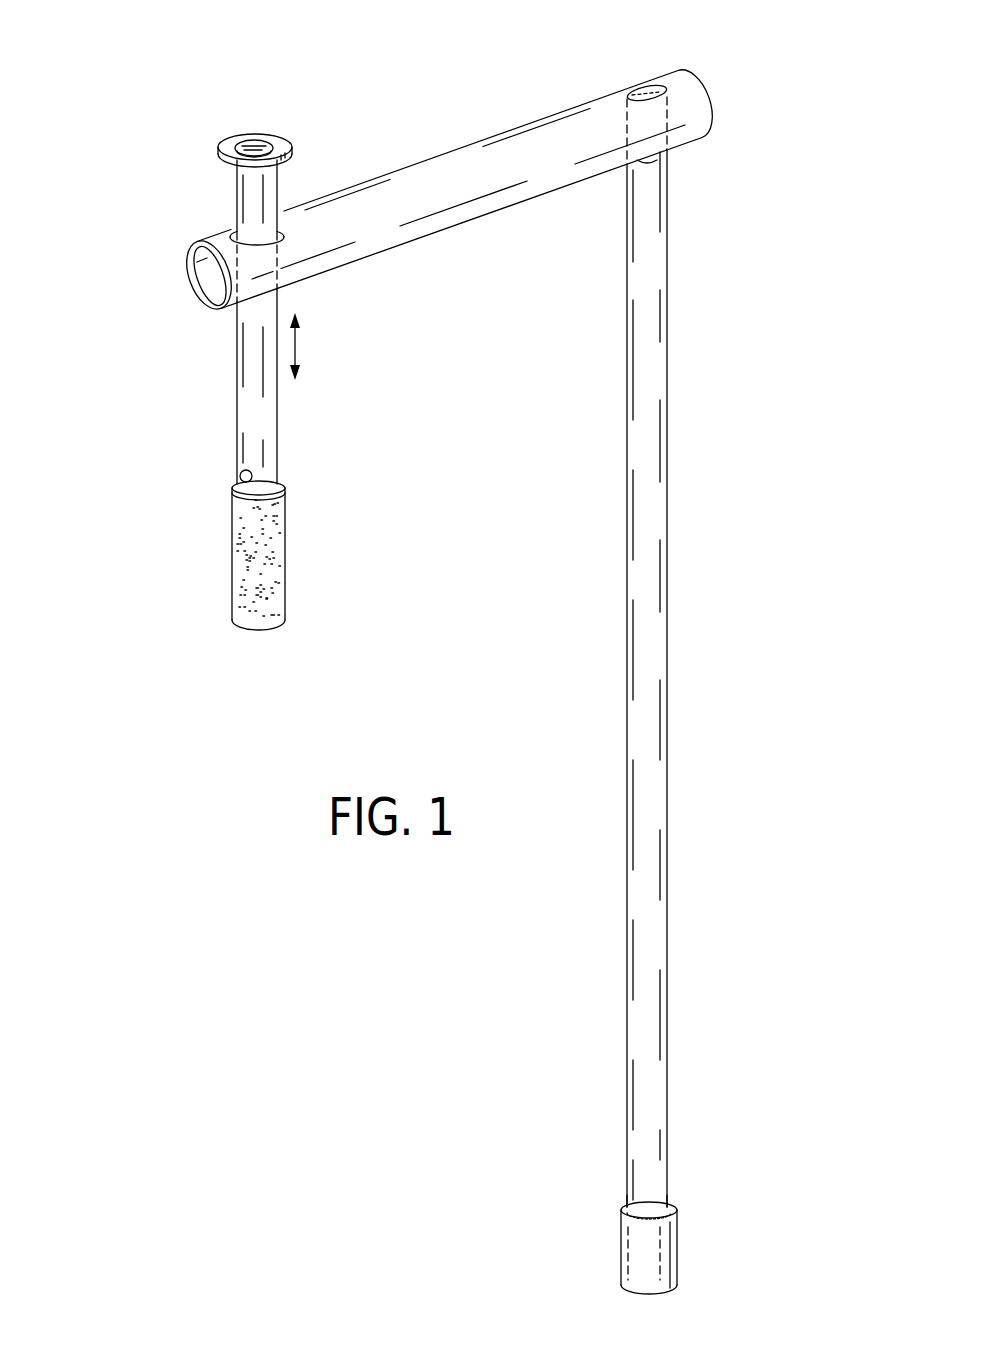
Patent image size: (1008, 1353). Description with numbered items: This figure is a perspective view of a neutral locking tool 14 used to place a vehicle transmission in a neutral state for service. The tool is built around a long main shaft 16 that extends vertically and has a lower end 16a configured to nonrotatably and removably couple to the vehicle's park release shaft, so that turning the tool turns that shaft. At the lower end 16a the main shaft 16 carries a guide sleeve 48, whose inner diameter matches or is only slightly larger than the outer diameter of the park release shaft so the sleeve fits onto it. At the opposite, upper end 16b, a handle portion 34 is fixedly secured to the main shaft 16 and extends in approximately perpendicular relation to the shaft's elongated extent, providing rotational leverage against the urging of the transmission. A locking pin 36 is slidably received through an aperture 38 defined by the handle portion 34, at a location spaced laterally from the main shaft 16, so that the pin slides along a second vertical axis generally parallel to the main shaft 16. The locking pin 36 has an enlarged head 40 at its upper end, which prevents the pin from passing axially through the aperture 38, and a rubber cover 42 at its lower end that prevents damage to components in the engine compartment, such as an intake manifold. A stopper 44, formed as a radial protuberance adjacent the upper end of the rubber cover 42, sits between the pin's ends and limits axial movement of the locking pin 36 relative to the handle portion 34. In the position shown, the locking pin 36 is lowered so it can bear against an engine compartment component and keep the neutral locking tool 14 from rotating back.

The neutral locking tool 14 is at (152, 205).
The main shaft 16 is at (657, 625).
The lower end 16a is at (650, 1208).
The upper end 16b is at (642, 90).
The handle portion 34 is at (437, 167).
The locking pin 36 is at (248, 378).
The aperture 38 is at (281, 233).
The enlarged head 40 is at (281, 143).
The rubber cover 42 is at (270, 575).
The stopper 44 is at (242, 473).
The guide sleeve 48 is at (637, 1247).